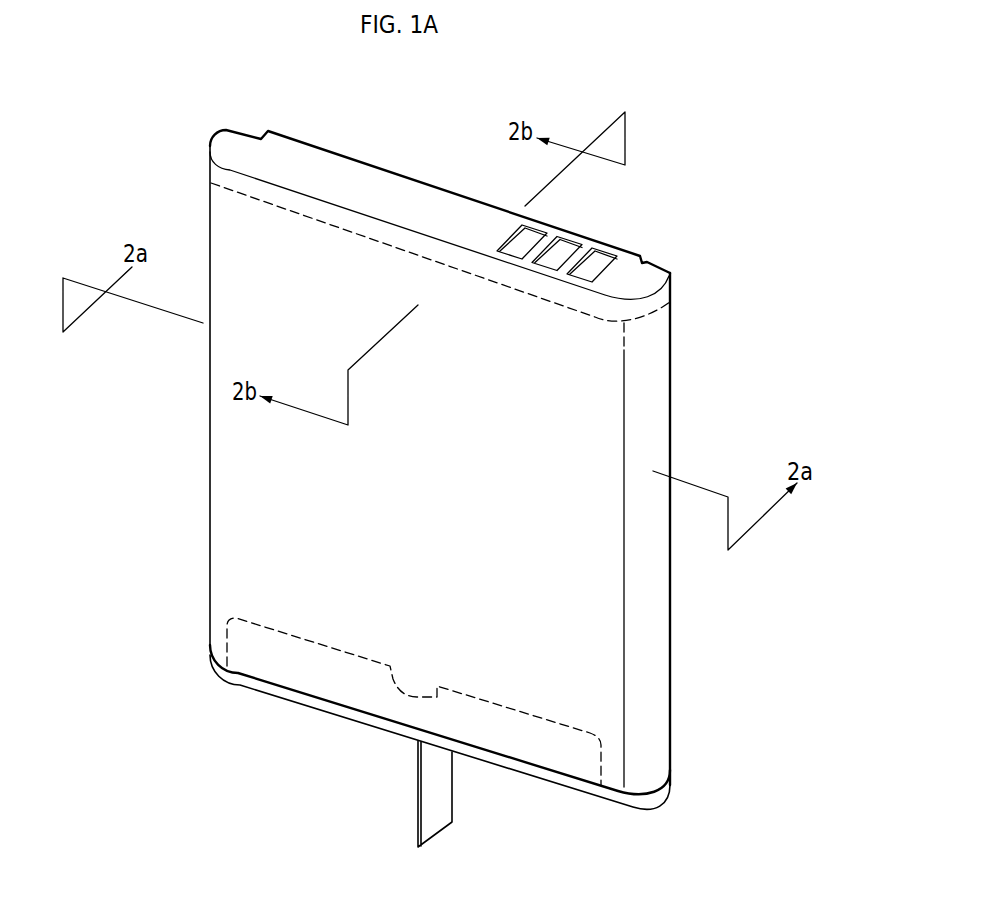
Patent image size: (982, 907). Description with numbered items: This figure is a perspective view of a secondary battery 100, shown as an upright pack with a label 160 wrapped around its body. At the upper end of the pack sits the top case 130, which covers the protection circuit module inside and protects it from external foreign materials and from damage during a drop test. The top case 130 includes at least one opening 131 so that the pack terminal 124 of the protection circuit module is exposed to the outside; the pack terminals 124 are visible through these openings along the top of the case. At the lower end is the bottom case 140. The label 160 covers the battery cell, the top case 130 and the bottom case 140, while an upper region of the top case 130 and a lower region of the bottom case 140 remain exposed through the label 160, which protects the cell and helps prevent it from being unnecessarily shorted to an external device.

The secondary battery 100 is at (712, 148).
The pack terminal 124 is at (527, 233).
The top case 130 is at (320, 160).
The opening 131 is at (600, 258).
The bottom case 140 is at (550, 787).
The label 160 is at (662, 393).